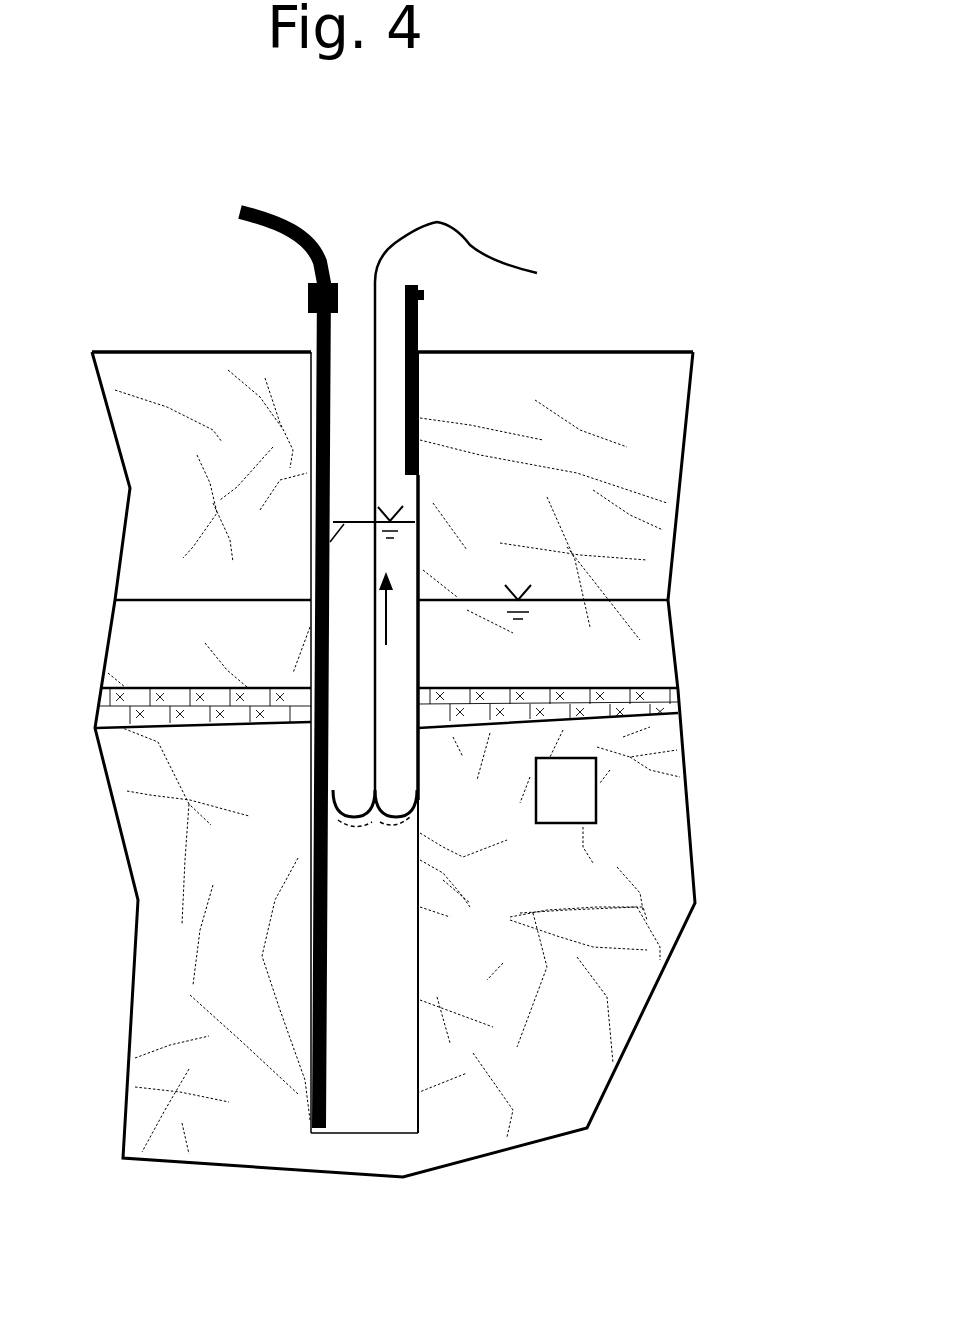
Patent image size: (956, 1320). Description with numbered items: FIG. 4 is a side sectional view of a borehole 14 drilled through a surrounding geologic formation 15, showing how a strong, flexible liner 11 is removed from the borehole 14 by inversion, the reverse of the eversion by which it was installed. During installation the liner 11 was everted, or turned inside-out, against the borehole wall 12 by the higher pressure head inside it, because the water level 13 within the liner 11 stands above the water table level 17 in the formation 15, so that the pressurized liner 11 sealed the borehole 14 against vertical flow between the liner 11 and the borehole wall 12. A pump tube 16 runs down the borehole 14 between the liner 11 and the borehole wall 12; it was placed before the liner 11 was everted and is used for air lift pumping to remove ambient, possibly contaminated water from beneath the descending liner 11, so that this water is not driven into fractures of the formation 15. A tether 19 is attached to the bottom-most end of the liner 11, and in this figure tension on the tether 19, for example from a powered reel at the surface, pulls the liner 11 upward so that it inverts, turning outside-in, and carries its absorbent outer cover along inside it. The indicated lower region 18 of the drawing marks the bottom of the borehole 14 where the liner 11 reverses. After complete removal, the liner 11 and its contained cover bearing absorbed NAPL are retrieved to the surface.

The flexible liner 11 is at (410, 478).
The borehole wall 12 is at (417, 807).
The water level 13 is at (313, 560).
The borehole 14 is at (370, 1020).
The geologic formation 15 is at (566, 790).
The pump tube 16 is at (289, 659).
The water table level 17 is at (643, 600).
The borehole bottom 18 is at (418, 1133).
The tether 19 is at (507, 262).